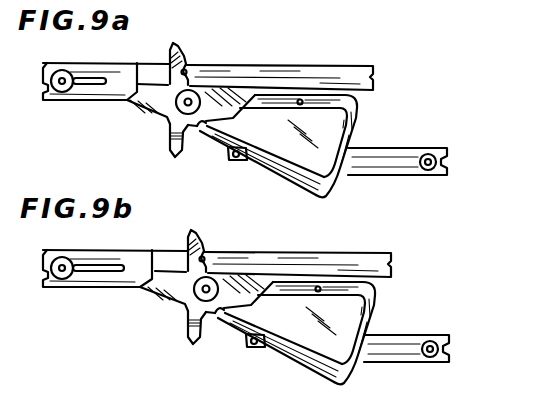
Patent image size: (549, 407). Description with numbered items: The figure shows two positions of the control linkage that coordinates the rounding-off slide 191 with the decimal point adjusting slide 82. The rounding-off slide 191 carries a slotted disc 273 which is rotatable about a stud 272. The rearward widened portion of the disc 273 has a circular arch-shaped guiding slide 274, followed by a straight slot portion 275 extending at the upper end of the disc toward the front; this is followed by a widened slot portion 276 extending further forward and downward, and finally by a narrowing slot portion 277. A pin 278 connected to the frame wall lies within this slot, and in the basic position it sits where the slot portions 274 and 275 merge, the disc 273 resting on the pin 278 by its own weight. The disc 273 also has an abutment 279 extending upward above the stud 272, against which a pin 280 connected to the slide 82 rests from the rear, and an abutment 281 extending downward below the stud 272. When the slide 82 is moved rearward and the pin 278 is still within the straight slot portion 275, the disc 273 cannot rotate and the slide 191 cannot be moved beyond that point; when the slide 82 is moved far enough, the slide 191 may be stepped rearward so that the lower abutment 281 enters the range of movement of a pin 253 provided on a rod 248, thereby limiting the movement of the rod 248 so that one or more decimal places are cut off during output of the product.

In FIG. 9a, the decimal point adjusting slide 82 is at (375, 79).
In FIG. 9b, the decimal point adjusting slide 82 is at (393, 266).
In FIG. 9a, the rounding-off slide 191 is at (49, 101).
In FIG. 9b, the rounding-off slide 191 is at (50, 288).
In FIG. 9a, the stud 272 is at (185, 110).
In FIG. 9b, the stud 272 is at (203, 297).
In FIG. 9a, the abutment 281 is at (168, 143).
In FIG. 9b, the abutment 281 is at (186, 331).
In FIG. 9a, the narrowing slot portion 277 is at (205, 130).
In FIG. 9b, the narrowing slot portion 277 is at (222, 318).
In FIG. 9a, the abutment 279 is at (172, 53).
In FIG. 9b, the abutment 279 is at (190, 241).
In FIG. 9a, the pin 280 is at (187, 72).
In FIG. 9b, the pin 280 is at (205, 259).
In FIG. 9a, the pin 278 is at (299, 99).
In FIG. 9b, the pin 278 is at (317, 285).
In FIG. 9a, the straight slot portion 275 is at (322, 110).
In FIG. 9b, the straight slot portion 275 is at (340, 297).
In FIG. 9a, the circular arch-shaped guiding slide 274 is at (342, 136).
In FIG. 9b, the circular arch-shaped guiding slide 274 is at (358, 316).
In FIG. 9a, the slotted disc 273 is at (331, 196).
In FIG. 9b, the slotted disc 273 is at (305, 355).
In FIG. 9a, the widened slot portion 276 is at (292, 110).
In FIG. 9b, the widened slot portion 276 is at (310, 297).
In FIG. 9a, the pin 253 is at (231, 156).
In FIG. 9b, the pin 253 is at (250, 343).
In FIG. 9a, the rod 248 is at (444, 161).
In FIG. 9b, the rod 248 is at (447, 347).